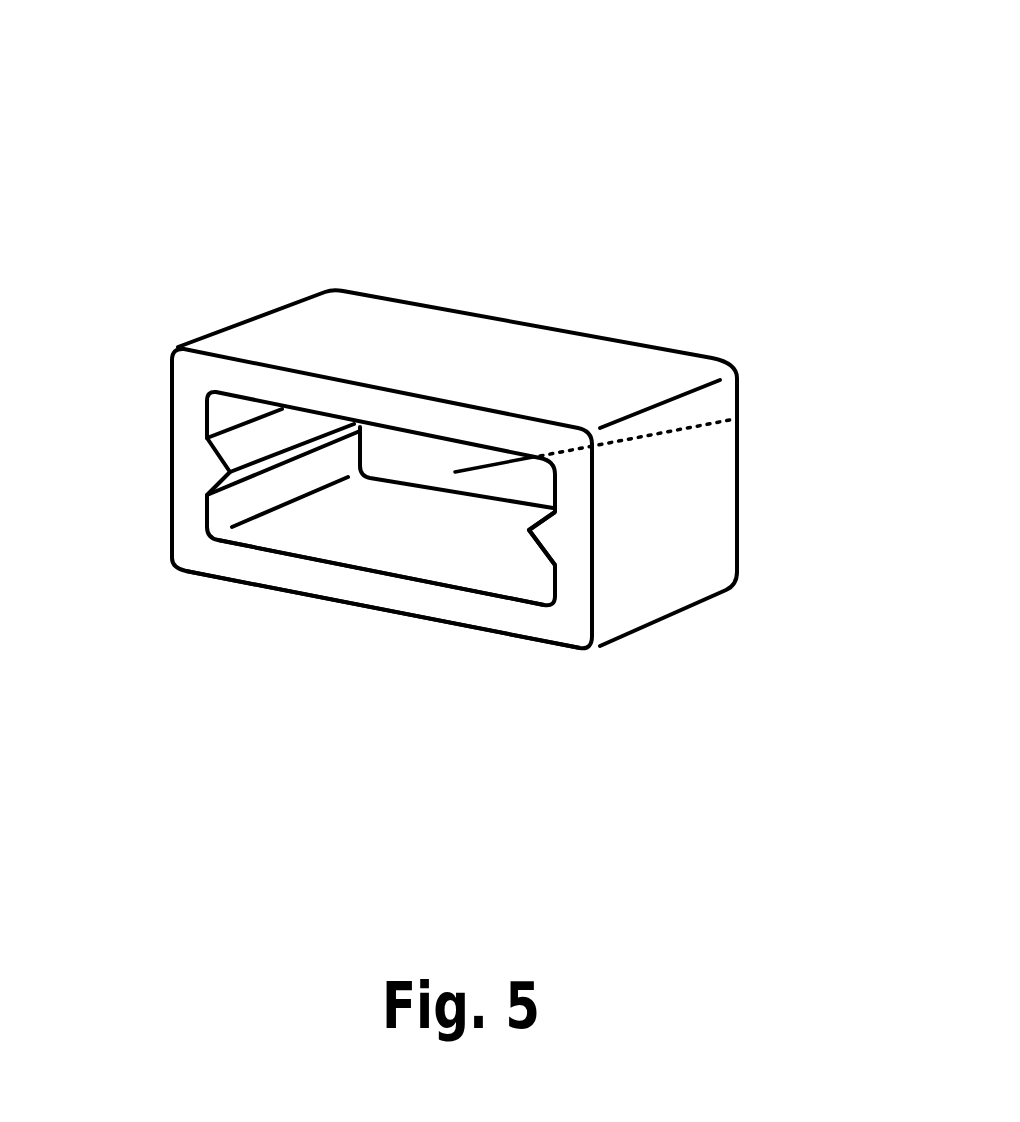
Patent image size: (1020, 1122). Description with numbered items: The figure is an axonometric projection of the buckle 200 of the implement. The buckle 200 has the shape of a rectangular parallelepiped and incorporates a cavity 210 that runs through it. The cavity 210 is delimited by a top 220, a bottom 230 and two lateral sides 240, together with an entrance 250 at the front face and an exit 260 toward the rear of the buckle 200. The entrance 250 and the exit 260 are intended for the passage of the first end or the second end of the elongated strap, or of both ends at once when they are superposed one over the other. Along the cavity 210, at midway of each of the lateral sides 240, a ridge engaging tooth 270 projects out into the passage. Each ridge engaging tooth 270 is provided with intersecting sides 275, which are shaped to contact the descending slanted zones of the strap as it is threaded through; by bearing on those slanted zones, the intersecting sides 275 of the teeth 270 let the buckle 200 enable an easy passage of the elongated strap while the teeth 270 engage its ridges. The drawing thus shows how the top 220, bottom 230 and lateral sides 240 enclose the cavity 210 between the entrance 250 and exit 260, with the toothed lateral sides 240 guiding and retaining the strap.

The buckle 200 is at (423, 138).
The cavity 210 is at (379, 540).
The top 220 is at (533, 368).
The bottom 230 is at (492, 553).
The lateral sides 240 is at (663, 473).
The entrance 250 is at (263, 552).
The exit 260 is at (735, 419).
The ridge engaging tooth 270 is at (547, 537).
The intersecting sides 275 is at (253, 443).